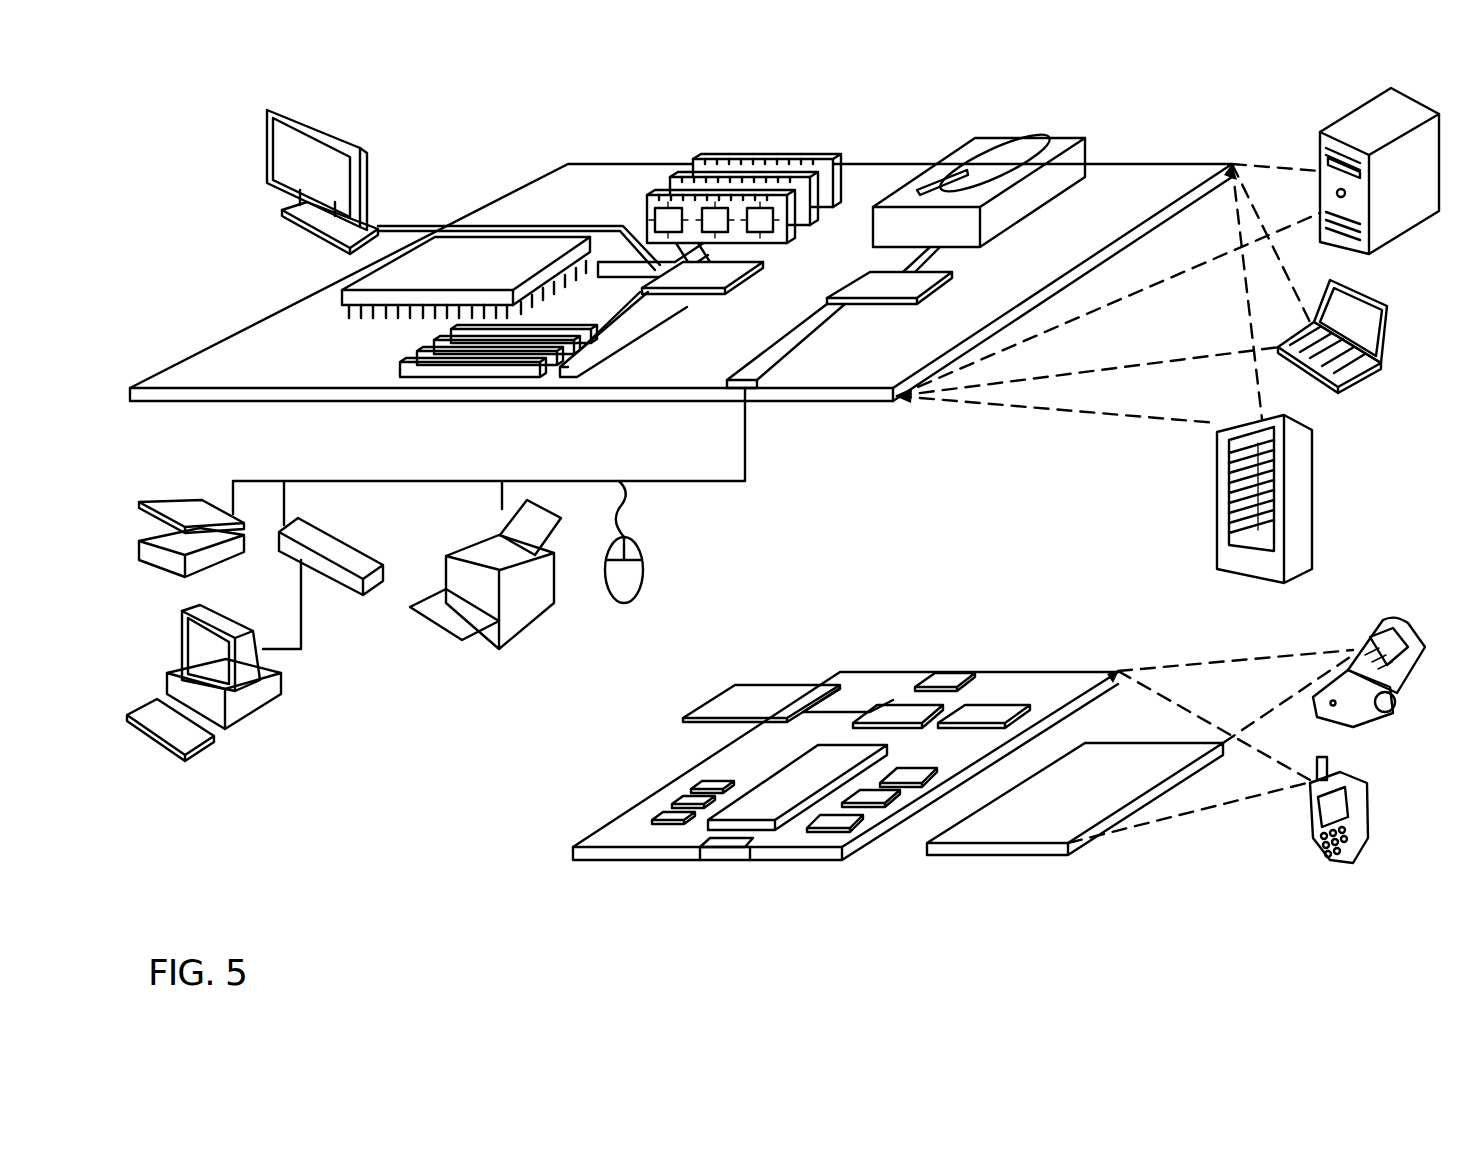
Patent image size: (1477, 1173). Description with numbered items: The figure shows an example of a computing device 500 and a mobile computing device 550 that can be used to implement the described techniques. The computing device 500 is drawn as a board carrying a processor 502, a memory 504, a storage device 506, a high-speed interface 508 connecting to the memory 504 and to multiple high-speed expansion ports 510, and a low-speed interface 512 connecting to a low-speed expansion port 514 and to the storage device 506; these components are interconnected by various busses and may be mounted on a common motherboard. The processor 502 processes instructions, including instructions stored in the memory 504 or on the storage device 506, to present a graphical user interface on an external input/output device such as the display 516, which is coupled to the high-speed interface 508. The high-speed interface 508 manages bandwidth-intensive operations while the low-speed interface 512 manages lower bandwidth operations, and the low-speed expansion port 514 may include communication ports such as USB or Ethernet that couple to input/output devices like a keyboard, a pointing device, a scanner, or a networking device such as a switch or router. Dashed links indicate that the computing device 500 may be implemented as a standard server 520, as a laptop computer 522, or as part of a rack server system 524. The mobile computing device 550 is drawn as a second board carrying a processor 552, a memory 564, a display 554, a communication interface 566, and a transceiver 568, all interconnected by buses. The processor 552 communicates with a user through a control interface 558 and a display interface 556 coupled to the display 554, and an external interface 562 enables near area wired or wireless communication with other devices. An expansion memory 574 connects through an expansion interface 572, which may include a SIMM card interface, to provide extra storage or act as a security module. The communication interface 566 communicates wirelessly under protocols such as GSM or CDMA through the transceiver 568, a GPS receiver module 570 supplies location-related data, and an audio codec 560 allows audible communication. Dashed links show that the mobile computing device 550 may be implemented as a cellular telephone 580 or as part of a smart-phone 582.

The computing device 500 is at (486, 131).
The processor 502 is at (340, 293).
The memory 504 is at (709, 160).
The storage device 506 is at (975, 141).
The high-speed interface 508 is at (660, 268).
The high-speed expansion ports 510 is at (420, 353).
The low-speed interface 512 is at (868, 285).
The low-speed expansion port 514 is at (758, 392).
The display 516 is at (269, 109).
The standard server 520 is at (1320, 146).
The laptop computer 522 is at (1379, 330).
The rack server system 524 is at (1217, 526).
The mobile computing device 550 is at (540, 863).
The processor 552 is at (768, 812).
The display 554 is at (1030, 835).
The display interface 556 is at (843, 831).
The control interface 558 is at (880, 805).
The audio codec 560 is at (907, 779).
The external interface 562 is at (730, 862).
The memory 564 is at (664, 816).
The communication interface 566 is at (904, 718).
The transceiver 568 is at (983, 712).
The GPS receiver module 570 is at (958, 684).
The expansion interface 572 is at (822, 686).
The expansion memory 574 is at (747, 684).
The cellular telephone 580 is at (1373, 623).
The smart-phone 582 is at (1310, 810).